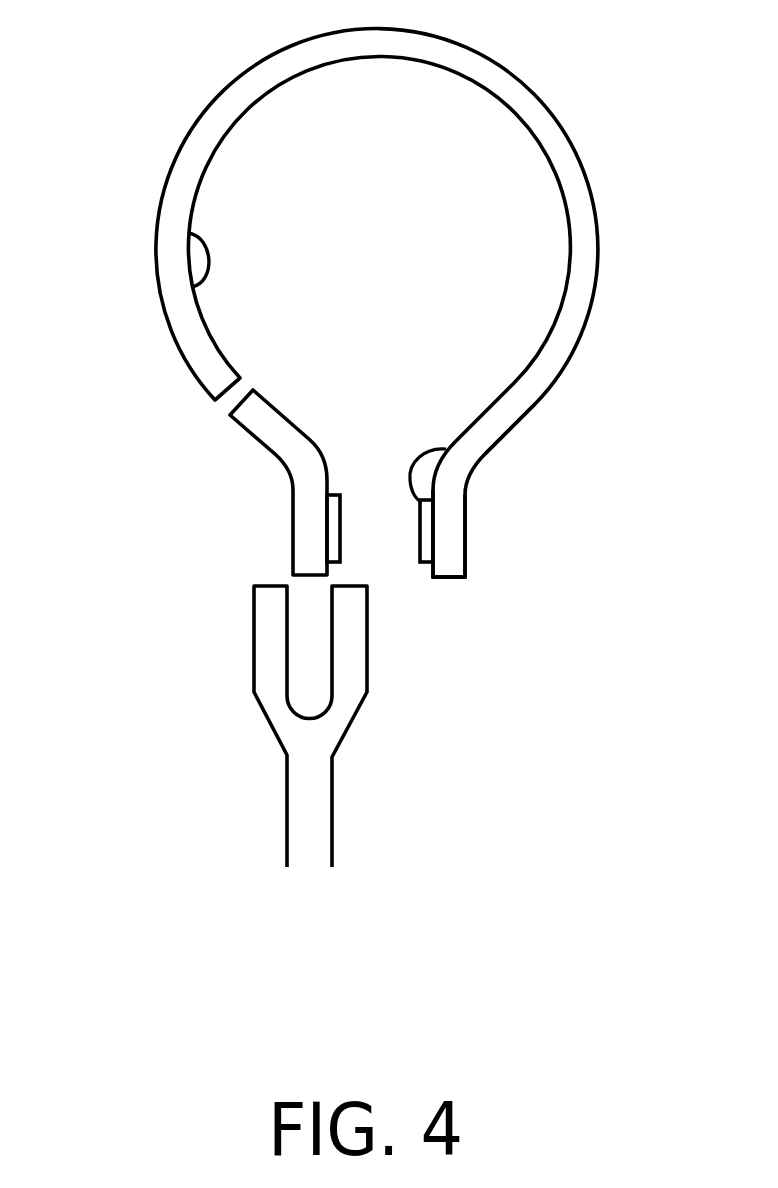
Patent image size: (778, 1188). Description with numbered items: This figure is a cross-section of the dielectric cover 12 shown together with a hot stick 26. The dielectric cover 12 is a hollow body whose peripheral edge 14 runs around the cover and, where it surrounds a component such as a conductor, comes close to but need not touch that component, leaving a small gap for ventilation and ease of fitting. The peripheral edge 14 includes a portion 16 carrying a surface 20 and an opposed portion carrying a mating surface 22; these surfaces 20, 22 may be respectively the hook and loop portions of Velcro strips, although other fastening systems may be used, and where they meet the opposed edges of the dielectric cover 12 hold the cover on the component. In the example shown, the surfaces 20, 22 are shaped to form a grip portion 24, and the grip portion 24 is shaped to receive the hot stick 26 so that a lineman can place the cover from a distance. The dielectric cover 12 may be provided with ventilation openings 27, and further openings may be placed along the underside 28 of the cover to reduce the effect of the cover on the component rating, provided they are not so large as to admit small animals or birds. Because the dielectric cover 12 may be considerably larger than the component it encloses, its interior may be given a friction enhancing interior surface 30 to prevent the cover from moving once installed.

The dielectric cover 12 is at (604, 242).
The peripheral edge 14 is at (448, 578).
The portion of peripheral edge 16 is at (466, 537).
The surface 20 is at (342, 506).
The surface 22 is at (470, 452).
The grip portion 24 is at (294, 550).
The hot stick 26 is at (287, 815).
The ventilation openings 27 is at (222, 400).
The underside 28 is at (518, 426).
The friction enhancing interior surface 30 is at (192, 287).